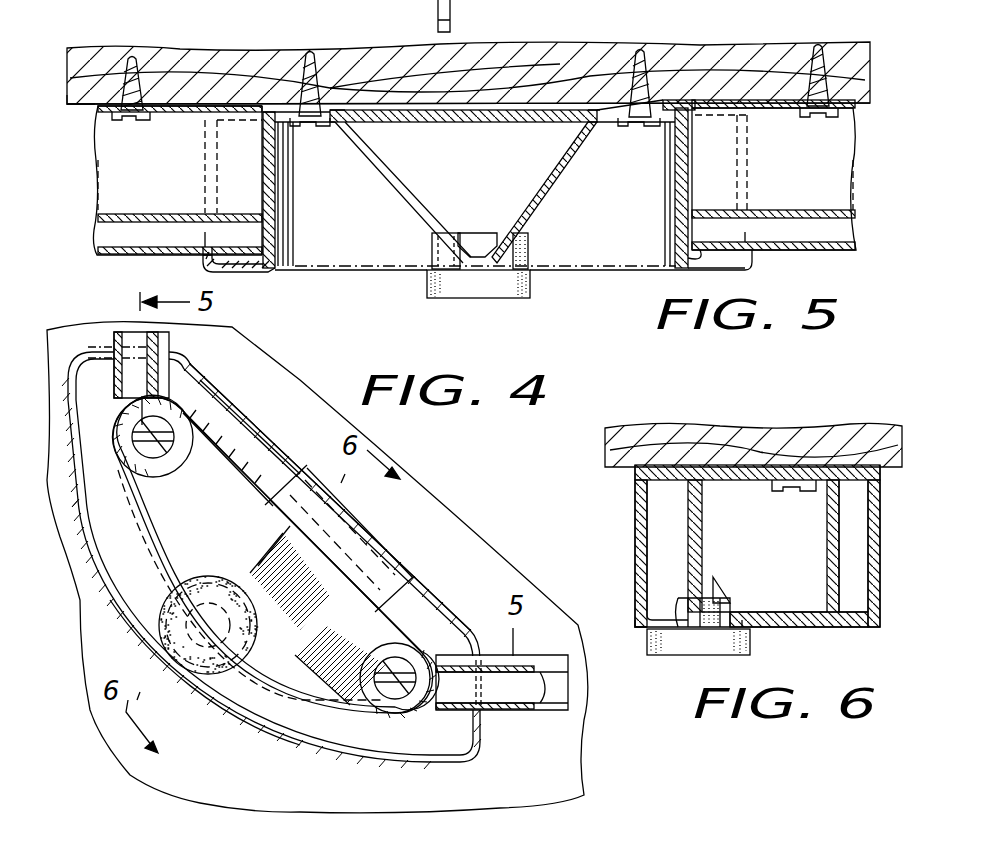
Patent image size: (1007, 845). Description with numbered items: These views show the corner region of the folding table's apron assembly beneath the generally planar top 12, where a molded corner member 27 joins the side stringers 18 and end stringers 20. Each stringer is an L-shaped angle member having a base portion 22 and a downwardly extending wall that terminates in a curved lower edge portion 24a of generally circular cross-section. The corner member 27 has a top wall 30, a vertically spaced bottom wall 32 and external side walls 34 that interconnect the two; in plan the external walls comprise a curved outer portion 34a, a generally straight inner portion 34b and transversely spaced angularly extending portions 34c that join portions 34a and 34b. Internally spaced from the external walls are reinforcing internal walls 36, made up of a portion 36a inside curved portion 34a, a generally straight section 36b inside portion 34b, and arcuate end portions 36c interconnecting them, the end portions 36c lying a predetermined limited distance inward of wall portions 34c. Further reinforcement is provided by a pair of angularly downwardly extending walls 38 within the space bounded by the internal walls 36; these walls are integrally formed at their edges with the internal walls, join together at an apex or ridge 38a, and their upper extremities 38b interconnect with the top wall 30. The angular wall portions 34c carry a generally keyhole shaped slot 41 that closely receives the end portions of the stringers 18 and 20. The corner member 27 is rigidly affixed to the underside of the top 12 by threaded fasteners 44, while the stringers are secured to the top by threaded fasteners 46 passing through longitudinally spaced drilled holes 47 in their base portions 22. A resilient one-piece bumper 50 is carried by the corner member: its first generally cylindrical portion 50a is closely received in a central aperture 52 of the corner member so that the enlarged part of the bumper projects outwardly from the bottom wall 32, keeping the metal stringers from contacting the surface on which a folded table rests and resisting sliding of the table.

In FIG. 5, the top 12 is at (740, 44).
In FIG. 4, the top 12 is at (157, 778).
In FIG. 6, the top 12 is at (705, 424).
In FIG. 5, the side stringers 18 is at (838, 175).
In FIG. 4, the side stringers 18 is at (557, 710).
In FIG. 5, the end stringers 20 is at (112, 183).
In FIG. 4, the end stringers 20 is at (170, 338).
In FIG. 5, the base portion 22 is at (177, 116).
In FIG. 5, the curved lower edge portion 24a is at (130, 252).
In FIG. 5, the corner members 27 is at (469, 174).
In FIG. 4, the corner members 27 is at (392, 527).
In FIG. 6, the corner members 27 is at (632, 500).
In FIG. 5, the top wall 30 is at (486, 114).
In FIG. 6, the top wall 30 is at (797, 466).
In FIG. 5, the bottom wall 32 is at (247, 272).
In FIG. 6, the bottom wall 32 is at (643, 632).
In FIG. 5, the external side walls 34 is at (205, 162).
In FIG. 4, the external side walls 34 is at (408, 563).
In FIG. 6, the external side walls 34 is at (633, 522).
In FIG. 4, the curved outer portion 34a is at (300, 756).
In FIG. 4, the straight inner portion 34b is at (283, 440).
In FIG. 5, the angularly extending portions 34c is at (202, 188).
In FIG. 4, the angularly extending portions 34c is at (84, 351).
In FIG. 5, the internal walls 36 is at (295, 233).
In FIG. 4, the internal walls 36 is at (400, 626).
In FIG. 6, the internal walls 36 is at (847, 590).
In FIG. 4, the internal wall portion 36a is at (150, 510).
In FIG. 6, the internal wall portion 36a is at (706, 551).
In FIG. 4, the straight section 36b is at (247, 420).
In FIG. 4, the arcuate end portions 36c is at (114, 426).
In FIG. 5, the angularly downwardly extending walls 38 is at (398, 187).
In FIG. 4, the angularly downwardly extending walls 38 is at (198, 537).
In FIG. 5, the apex 38a is at (483, 266).
In FIG. 4, the apex 38a is at (262, 557).
In FIG. 6, the apex 38a is at (800, 622).
In FIG. 5, the upper extremities 38b is at (341, 114).
In FIG. 5, the keyhole shaped slot 41 is at (205, 240).
In FIG. 5, the threaded fasteners 44 is at (317, 110).
In FIG. 4, the threaded fasteners 44 is at (166, 455).
In FIG. 6, the threaded fasteners 44 is at (782, 493).
In FIG. 5, the threaded fasteners 46 is at (126, 98).
In FIG. 5, the drilled holes 47 is at (835, 93).
In FIG. 5, the bumper members 50 is at (432, 296).
In FIG. 4, the bumper members 50 is at (177, 640).
In FIG. 6, the bumper members 50 is at (752, 642).
In FIG. 5, the first cylindrical portion 50a is at (474, 233).
In FIG. 6, the first cylindrical portion 50a is at (722, 606).
In FIG. 6, the central aperture 52 is at (680, 600).